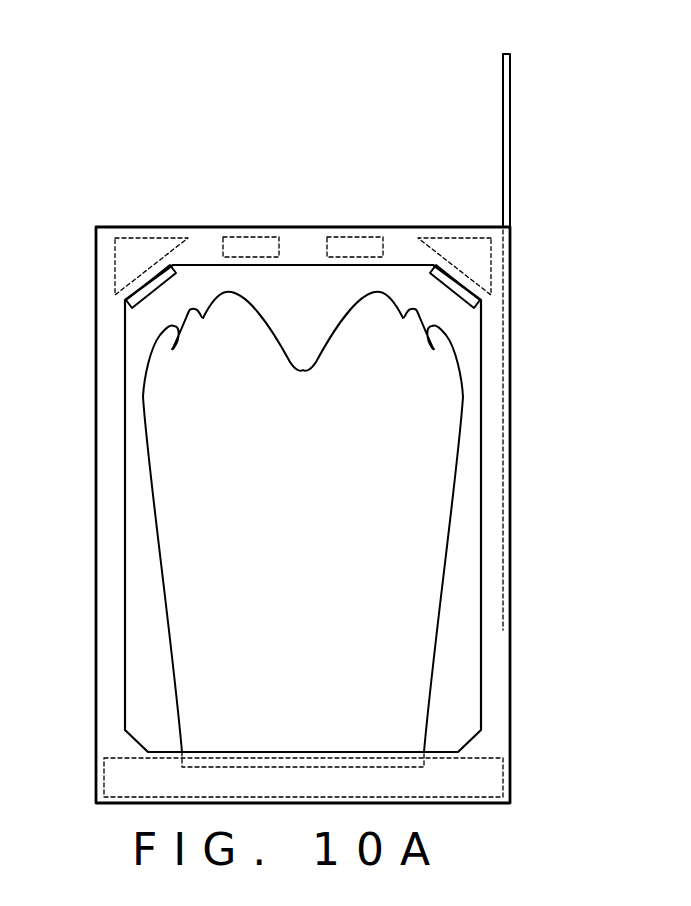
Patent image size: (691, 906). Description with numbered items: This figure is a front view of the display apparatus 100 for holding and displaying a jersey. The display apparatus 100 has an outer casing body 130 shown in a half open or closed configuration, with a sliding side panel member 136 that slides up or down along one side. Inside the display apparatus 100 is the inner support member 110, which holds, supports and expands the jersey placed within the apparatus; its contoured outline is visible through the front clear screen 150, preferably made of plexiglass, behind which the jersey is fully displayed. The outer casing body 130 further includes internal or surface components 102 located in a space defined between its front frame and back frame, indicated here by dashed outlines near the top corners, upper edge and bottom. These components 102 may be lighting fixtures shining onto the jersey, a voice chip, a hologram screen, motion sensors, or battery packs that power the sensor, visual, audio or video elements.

The display apparatus 100 is at (298, 192).
The internal or surface components 102 is at (135, 257).
The inner support member 110 is at (362, 593).
The outer casing body 130 is at (485, 747).
The sliding side panel member 136 is at (597, 333).
The front clear screen 150 is at (150, 625).